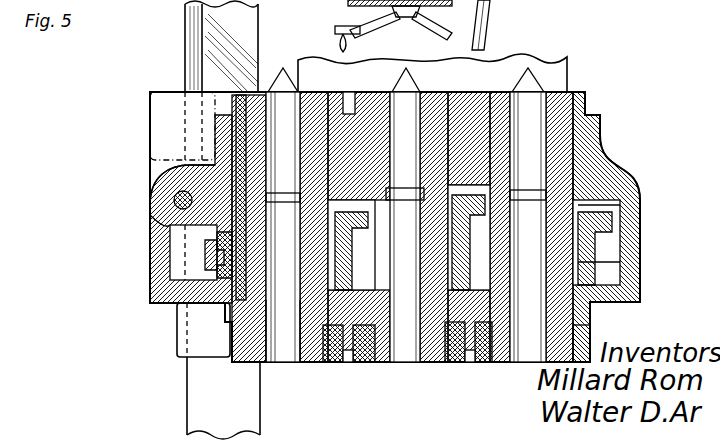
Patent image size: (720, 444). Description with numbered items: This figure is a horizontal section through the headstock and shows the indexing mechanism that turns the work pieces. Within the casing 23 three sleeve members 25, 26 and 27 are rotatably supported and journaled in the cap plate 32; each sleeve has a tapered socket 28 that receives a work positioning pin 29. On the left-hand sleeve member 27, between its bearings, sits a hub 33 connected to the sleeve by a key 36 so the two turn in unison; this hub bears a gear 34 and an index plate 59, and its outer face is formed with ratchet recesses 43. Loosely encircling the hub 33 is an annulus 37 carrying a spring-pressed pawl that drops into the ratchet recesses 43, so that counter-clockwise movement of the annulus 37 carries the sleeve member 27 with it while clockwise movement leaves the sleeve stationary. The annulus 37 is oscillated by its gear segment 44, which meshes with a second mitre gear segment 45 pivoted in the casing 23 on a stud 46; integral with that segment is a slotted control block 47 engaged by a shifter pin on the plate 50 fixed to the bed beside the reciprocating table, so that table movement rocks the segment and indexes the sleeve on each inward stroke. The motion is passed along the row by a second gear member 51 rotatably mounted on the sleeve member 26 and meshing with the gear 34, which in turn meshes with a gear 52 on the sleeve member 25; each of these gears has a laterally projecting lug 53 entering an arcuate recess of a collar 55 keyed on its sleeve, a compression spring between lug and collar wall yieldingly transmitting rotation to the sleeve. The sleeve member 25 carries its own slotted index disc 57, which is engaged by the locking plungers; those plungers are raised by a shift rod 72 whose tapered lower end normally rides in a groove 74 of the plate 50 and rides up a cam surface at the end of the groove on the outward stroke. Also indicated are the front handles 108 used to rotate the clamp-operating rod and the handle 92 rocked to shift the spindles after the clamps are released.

The groove 74 is at (186, 6).
The control block 47 is at (300, 150).
The stud 46 is at (232, 138).
The index plate 59 is at (152, 160).
The shift rod 72 is at (176, 192).
The second mitre gear segment 45 is at (160, 212).
The gear 34 is at (216, 248).
The gear segment 44 is at (222, 272).
The hub 33 is at (148, 298).
The cap plate 32 is at (150, 320).
The annulus 37 is at (210, 305).
The plate 50 is at (198, 418).
The key 36 is at (297, 363).
The ratchet recesses 43 is at (336, 364).
The collar 55 is at (374, 364).
The lug 53 is at (436, 364).
The second gear member 51 is at (486, 364).
The sleeve member 27 is at (303, 214).
The work positioning pins 29 is at (410, 78).
The sleeve member 26 is at (452, 94).
The tapered sockets 28 is at (566, 92).
The sleeve member 25 is at (577, 98).
The casing 23 is at (602, 130).
The index disc 57 is at (605, 208).
The gear 52 is at (584, 265).
The handles 108 is at (378, 30).
The handle 92 is at (490, 4).